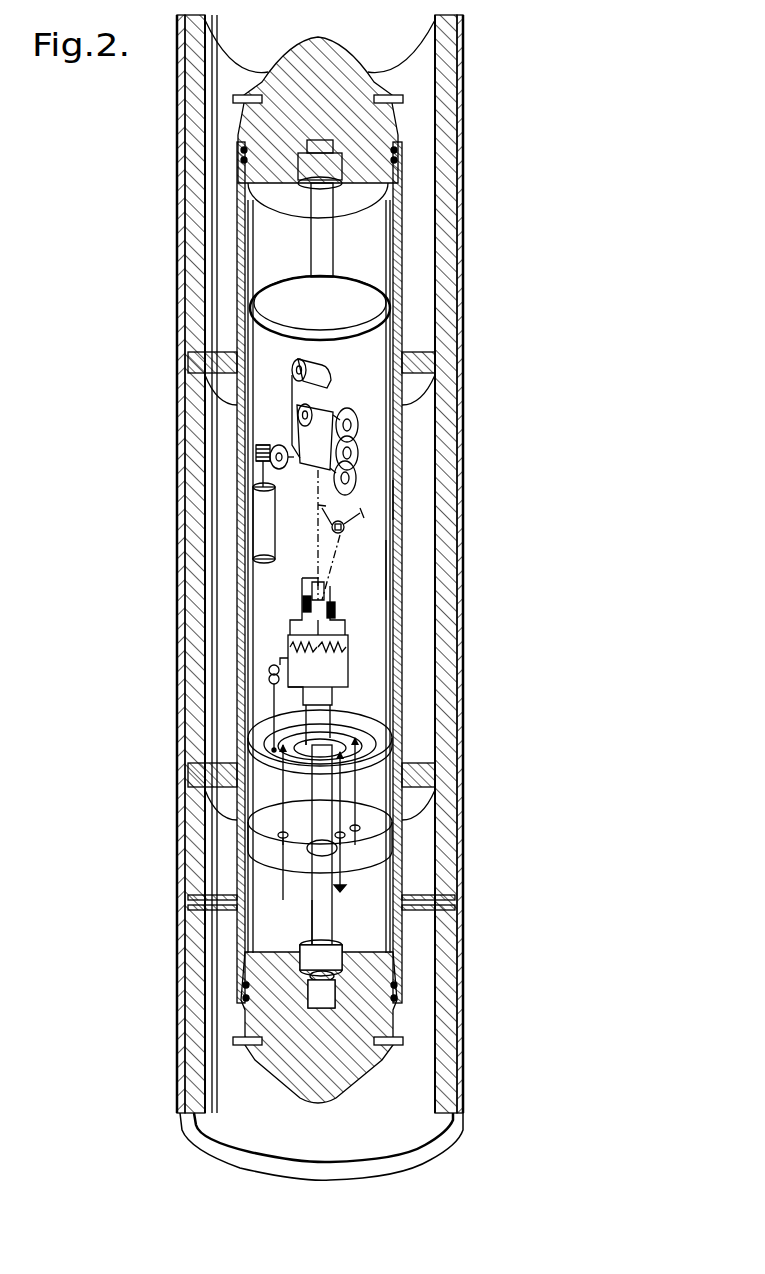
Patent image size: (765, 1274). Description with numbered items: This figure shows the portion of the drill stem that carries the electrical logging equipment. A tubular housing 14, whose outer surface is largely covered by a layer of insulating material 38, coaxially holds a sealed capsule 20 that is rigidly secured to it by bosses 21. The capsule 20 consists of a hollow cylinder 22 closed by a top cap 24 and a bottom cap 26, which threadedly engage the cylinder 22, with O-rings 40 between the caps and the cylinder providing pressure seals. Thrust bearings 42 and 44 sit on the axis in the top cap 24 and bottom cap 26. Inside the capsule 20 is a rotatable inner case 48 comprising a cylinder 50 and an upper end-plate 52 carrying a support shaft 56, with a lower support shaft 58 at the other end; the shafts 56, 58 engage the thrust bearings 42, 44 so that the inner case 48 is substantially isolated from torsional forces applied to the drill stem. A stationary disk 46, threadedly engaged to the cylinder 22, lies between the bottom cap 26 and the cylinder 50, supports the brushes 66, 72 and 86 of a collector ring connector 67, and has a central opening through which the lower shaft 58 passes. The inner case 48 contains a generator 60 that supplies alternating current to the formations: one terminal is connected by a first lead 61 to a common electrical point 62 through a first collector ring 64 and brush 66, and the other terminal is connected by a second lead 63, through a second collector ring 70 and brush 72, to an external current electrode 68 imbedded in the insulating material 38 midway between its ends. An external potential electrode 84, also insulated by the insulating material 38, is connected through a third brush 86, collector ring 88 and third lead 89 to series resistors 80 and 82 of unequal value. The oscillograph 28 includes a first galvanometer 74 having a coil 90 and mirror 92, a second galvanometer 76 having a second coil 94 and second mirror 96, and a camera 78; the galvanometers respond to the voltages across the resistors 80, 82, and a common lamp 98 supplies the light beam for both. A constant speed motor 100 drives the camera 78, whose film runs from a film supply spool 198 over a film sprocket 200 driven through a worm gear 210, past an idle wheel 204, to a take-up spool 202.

The tubular housing 14 is at (445, 968).
The sealed capsule 20 is at (410, 258).
The bosses 21 is at (435, 383).
The hollow cylinder 22 is at (405, 298).
The top cap 24 is at (314, 52).
The bottom cap 26 is at (322, 1098).
The oscillograph 28 is at (285, 526).
The insulating material 38 is at (463, 636).
The O-rings 40 is at (390, 152).
The thrust bearing 42 is at (315, 160).
The thrust bearing 44 is at (332, 956).
The stationary disk 46 is at (280, 862).
The inner case 48 is at (405, 493).
The cylinder 50 is at (395, 573).
The upper end-plate 52 is at (282, 290).
The support shaft 56 is at (334, 238).
The support shaft 58 is at (312, 926).
The generator 60 is at (279, 663).
The first lead 61 is at (318, 662).
The common electrical point 62 is at (320, 885).
The second lead 63 is at (286, 714).
The first collector ring 64 is at (312, 742).
The brush 66 is at (340, 792).
The collector ring connector 67 is at (380, 712).
The external current electrode 68 is at (463, 330).
The second collector ring 70 is at (274, 760).
The brush 72 is at (306, 766).
The first galvanometer 74 is at (293, 618).
The second galvanometer 76 is at (343, 608).
The camera 78 is at (293, 390).
The series resistor 80 is at (303, 657).
The series resistor 82 is at (332, 657).
The external potential electrode 84 is at (463, 822).
The third brush 86 is at (360, 792).
The collector ring 88 is at (363, 762).
The third lead 89 is at (333, 702).
The coil 90 is at (302, 592).
The mirror 92 is at (300, 605).
The second coil 94 is at (330, 600).
The second mirror 96 is at (340, 608).
The lamp 98 is at (344, 536).
The constant speed motor 100 is at (275, 504).
The film supply spool 198 is at (330, 372).
The film sprocket 200 is at (358, 475).
The take-up spool 202 is at (350, 420).
The idle wheel 204 is at (360, 452).
The worm gear 210 is at (265, 443).